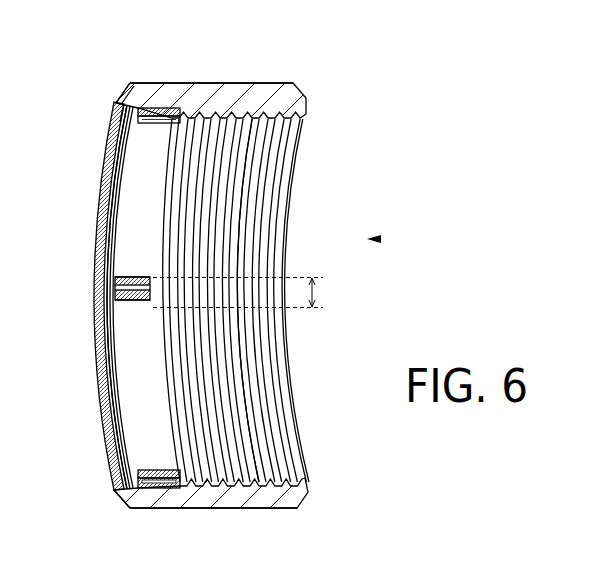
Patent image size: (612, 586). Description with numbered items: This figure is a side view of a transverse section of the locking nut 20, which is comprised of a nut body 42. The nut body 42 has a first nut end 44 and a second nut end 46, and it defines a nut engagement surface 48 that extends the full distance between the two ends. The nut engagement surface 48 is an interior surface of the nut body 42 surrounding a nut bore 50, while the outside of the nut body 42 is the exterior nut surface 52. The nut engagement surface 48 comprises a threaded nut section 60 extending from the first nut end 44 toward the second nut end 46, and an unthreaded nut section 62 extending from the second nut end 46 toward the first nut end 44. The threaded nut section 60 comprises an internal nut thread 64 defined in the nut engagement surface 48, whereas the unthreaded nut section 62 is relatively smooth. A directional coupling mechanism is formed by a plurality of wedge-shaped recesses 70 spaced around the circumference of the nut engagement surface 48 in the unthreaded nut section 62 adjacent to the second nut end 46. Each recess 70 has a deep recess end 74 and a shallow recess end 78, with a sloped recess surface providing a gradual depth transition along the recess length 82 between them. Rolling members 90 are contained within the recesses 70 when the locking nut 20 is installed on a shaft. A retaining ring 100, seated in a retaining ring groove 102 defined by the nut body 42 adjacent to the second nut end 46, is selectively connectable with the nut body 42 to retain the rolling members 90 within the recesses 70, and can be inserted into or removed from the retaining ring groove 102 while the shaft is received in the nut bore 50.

The locking nut 20 is at (380, 238).
The nut body 42 is at (207, 92).
The first nut end 44 is at (309, 493).
The second nut end 46 is at (113, 497).
The nut engagement surface 48 is at (257, 497).
The nut bore 50 is at (297, 229).
The exterior nut surface 52 is at (248, 84).
The threaded nut section 60 is at (263, 208).
The unthreaded nut section 62 is at (137, 217).
The internal nut thread 64 is at (262, 381).
The recesses 70 is at (146, 128).
The deep recess end 74 is at (144, 274).
The shallow recess end 78 is at (127, 302).
The recess length 82 is at (317, 292).
The rolling members 90 is at (162, 108).
The retaining ring 100 is at (130, 82).
The retaining ring groove 102 is at (120, 96).